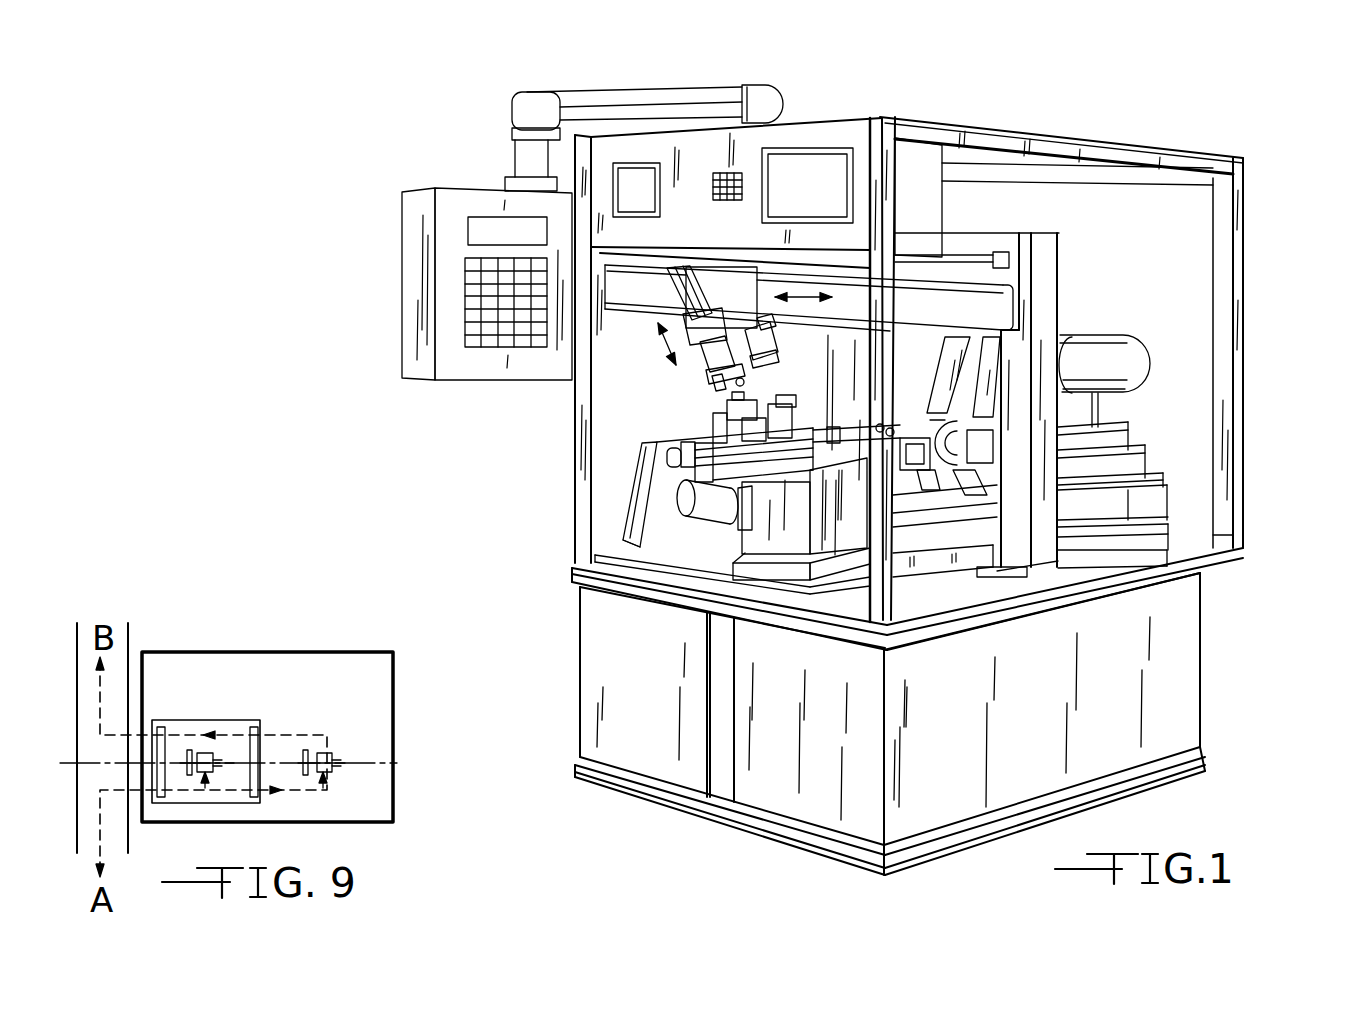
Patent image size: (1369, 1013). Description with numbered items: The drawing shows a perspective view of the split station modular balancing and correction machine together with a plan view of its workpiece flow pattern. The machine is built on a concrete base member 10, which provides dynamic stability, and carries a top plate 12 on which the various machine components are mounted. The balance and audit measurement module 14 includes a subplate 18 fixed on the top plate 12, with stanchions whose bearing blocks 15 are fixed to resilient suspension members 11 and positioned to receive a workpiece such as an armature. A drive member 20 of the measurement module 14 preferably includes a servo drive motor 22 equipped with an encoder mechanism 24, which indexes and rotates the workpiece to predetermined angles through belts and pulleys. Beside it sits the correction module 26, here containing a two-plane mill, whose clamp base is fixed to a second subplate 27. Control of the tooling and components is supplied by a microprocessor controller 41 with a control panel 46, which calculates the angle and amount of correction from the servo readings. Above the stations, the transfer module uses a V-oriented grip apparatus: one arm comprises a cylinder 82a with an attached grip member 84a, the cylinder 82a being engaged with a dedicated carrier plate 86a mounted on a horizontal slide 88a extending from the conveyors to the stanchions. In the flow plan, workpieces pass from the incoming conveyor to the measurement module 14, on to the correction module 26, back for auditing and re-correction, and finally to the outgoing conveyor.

In FIG. 1, the concrete base member 10 is at (1167, 648).
In FIG. 1, the resilient suspension members 11 is at (788, 395).
In FIG. 1, the top plate 12 is at (686, 578).
In FIG. 9, the balance and audit measurement module 14 is at (190, 738).
In FIG. 1, the bearing blocks 15 is at (718, 427).
In FIG. 1, the subplate 18 is at (643, 553).
In FIG. 1, the drive member 20 is at (627, 545).
In FIG. 1, the servo drive motor 22 is at (673, 523).
In FIG. 1, the encoder mechanism 24 is at (700, 503).
In FIG. 1, the correction module 26 is at (1152, 425).
In FIG. 9, the correction module 26 is at (352, 773).
In FIG. 1, the second subplate 27 is at (1160, 541).
In FIG. 1, the microprocessor controller 41 is at (910, 168).
In FIG. 1, the control panel 46 is at (470, 317).
In FIG. 1, the cylinder 82a is at (668, 268).
In FIG. 1, the grip member 84a is at (718, 384).
In FIG. 1, the carrier plate 86a is at (790, 140).
In FIG. 1, the horizontal slide 88a is at (970, 283).